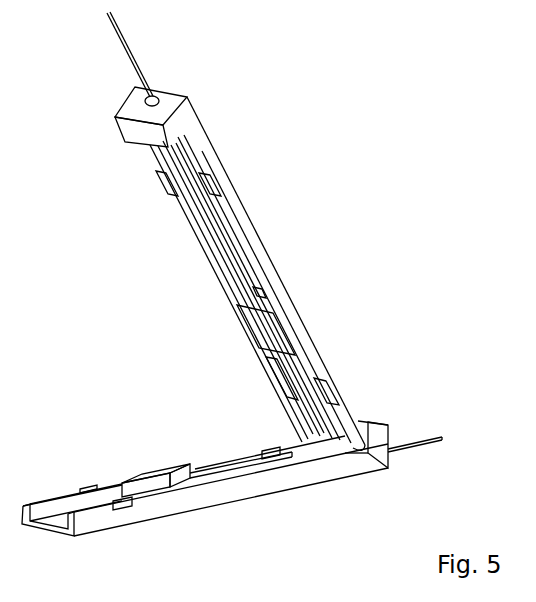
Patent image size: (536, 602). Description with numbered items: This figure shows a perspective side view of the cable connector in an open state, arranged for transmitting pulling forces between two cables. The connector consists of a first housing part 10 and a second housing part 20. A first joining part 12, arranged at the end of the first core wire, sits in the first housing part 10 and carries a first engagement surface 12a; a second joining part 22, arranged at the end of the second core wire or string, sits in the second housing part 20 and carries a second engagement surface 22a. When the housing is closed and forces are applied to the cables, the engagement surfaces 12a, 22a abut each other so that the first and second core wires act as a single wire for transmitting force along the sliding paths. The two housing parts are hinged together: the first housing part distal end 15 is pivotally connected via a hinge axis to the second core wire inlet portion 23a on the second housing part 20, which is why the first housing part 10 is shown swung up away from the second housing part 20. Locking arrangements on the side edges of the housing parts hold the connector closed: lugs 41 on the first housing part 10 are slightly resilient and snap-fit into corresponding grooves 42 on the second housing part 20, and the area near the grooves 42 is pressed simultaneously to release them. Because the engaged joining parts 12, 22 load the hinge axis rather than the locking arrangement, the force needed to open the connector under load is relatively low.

The first housing part 10 is at (210, 134).
The lugs 41 is at (212, 186).
The first engagement surface 12a is at (256, 294).
The first joining part 12 is at (262, 330).
The first housing part distal end 15 is at (352, 420).
The second housing part 20 is at (382, 426).
The second core wire inlet portion 23a is at (372, 448).
The second joining part 22 is at (158, 478).
The second engagement surface 22a is at (187, 477).
The grooves 42 is at (78, 490).